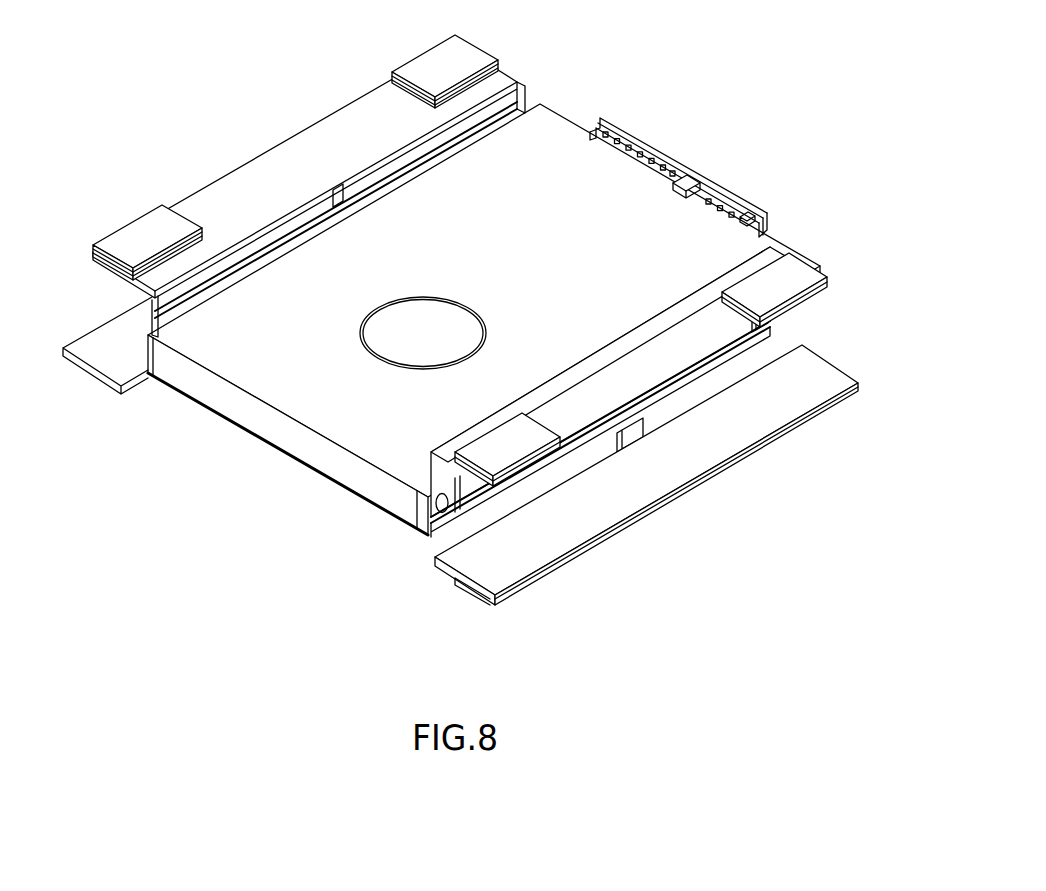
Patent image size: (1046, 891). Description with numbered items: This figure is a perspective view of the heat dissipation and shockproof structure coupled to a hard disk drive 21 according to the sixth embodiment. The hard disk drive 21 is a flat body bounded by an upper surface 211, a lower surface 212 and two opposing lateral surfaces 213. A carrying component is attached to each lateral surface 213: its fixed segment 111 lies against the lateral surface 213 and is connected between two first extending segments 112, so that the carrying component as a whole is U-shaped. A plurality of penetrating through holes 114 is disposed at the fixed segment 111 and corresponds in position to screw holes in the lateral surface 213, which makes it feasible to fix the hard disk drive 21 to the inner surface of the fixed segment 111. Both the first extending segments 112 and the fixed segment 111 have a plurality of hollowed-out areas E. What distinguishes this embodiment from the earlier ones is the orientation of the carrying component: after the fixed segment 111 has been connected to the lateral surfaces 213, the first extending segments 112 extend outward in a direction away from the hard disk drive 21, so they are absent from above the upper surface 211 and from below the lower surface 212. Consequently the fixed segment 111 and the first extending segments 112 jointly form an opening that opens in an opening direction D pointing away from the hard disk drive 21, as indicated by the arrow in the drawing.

The hard disk drive 21 is at (475, 321).
The upper surface 211 is at (240, 368).
The lower surface 212 is at (250, 437).
The lateral surface 213 is at (147, 358).
The fixed segment 111 is at (140, 327).
The first extending segment 112 is at (442, 324).
The through hole 114 is at (445, 512).
The hollowed-out area E is at (547, 112).
The opening direction D is at (540, 483).